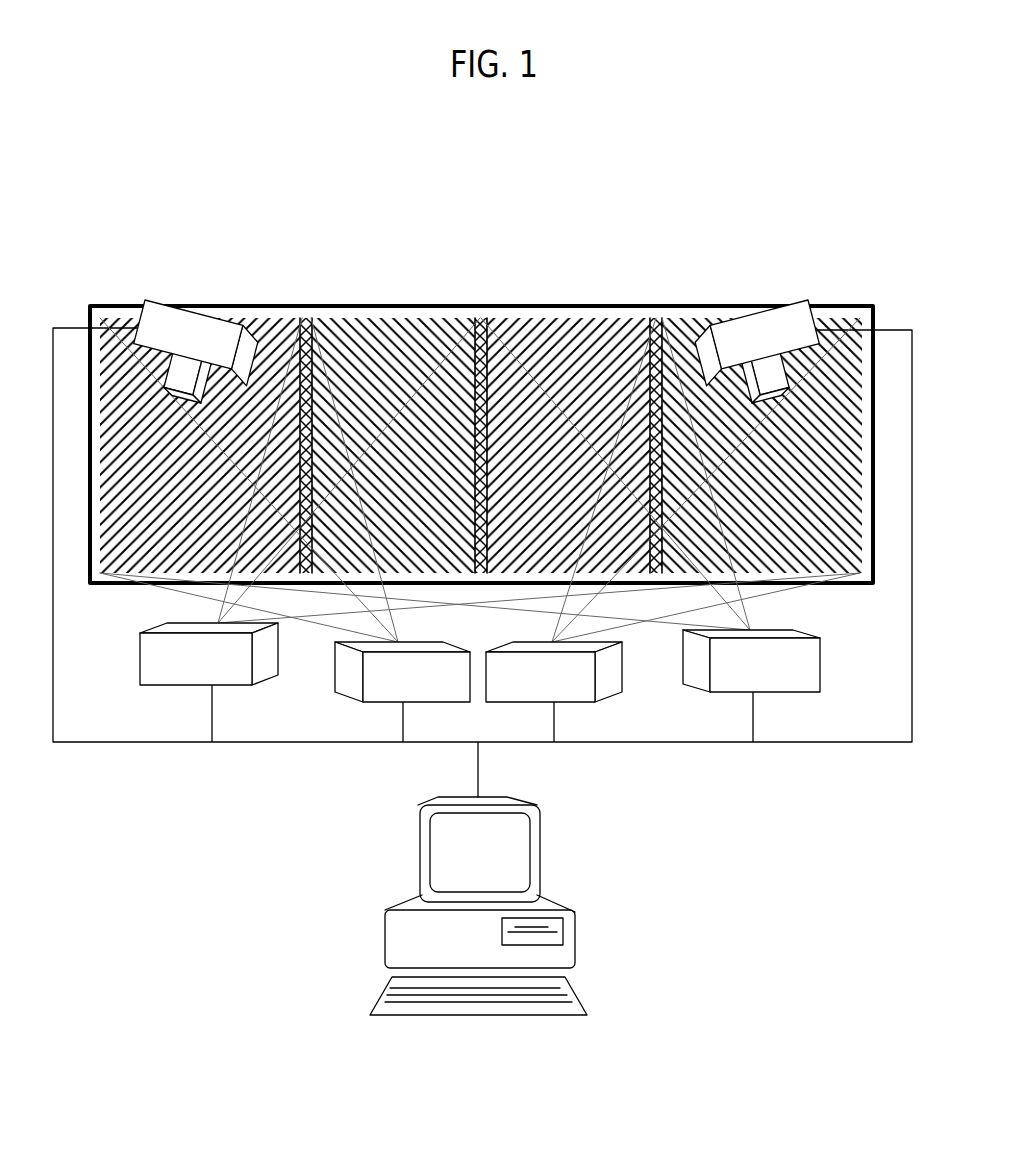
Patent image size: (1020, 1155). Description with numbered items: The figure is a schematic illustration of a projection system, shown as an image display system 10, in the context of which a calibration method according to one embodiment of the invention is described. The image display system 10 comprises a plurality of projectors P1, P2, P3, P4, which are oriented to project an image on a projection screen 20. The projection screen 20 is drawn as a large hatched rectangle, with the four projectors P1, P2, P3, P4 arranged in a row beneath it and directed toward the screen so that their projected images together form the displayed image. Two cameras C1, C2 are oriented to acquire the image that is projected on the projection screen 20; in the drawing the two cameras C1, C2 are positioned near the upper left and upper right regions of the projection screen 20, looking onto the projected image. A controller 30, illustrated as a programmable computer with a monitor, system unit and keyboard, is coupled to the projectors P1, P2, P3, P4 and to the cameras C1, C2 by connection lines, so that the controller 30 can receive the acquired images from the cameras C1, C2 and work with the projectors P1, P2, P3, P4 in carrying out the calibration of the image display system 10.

The image display system 10 is at (682, 158).
The projection screen 20 is at (287, 306).
The controller 30 is at (563, 908).
The camera C1 is at (196, 351).
The camera C2 is at (757, 351).
The projector P1 is at (209, 654).
The projector P2 is at (402, 672).
The projector P3 is at (554, 672).
The projector P4 is at (751, 661).